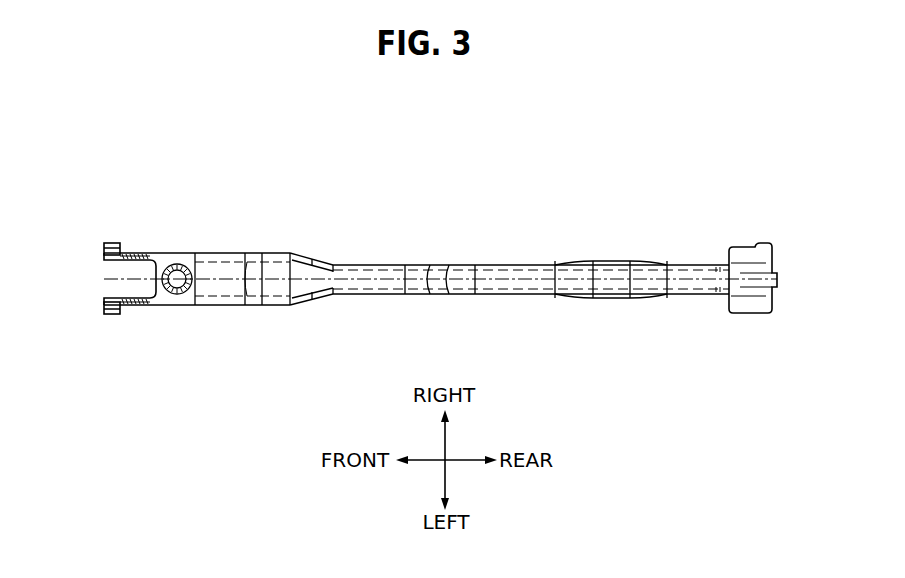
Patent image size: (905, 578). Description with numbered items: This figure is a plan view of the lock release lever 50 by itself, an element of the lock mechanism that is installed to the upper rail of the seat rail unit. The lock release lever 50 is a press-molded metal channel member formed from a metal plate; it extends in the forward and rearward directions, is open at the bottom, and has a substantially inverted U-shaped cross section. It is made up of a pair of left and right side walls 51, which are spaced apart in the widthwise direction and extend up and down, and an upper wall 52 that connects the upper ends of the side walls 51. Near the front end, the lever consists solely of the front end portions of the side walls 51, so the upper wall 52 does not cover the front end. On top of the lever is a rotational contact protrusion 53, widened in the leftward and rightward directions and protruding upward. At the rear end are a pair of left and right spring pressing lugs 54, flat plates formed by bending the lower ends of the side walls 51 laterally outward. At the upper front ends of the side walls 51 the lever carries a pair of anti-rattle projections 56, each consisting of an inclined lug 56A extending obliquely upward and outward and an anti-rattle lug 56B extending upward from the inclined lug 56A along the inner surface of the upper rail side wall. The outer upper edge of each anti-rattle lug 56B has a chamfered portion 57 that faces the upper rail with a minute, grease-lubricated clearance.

The lock release lever 50 is at (221, 142).
The side walls 51 is at (136, 294).
The upper wall 52 is at (233, 268).
The rotational contact protrusion 53 is at (278, 275).
The spring pressing lugs 54 is at (756, 250).
The anti-rattle projections 56 is at (48, 181).
The inclined lugs 56A is at (103, 257).
The anti-rattle lugs 56B is at (111, 244).
The chamfered portions 57 is at (118, 251).